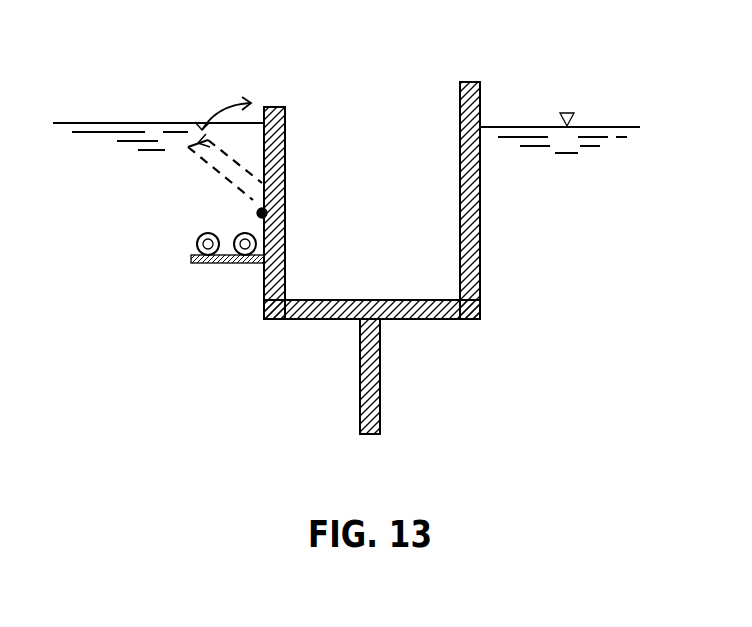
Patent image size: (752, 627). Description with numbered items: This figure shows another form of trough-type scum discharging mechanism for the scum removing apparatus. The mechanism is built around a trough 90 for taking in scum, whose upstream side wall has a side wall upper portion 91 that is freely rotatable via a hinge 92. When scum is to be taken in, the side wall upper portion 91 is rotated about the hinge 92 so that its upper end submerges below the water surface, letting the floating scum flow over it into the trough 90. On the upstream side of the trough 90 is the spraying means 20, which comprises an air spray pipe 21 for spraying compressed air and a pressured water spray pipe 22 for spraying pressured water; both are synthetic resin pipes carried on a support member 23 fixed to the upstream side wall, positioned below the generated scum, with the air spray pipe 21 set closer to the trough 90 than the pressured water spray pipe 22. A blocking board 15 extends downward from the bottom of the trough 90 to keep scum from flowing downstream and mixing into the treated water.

The blocking board 15 is at (381, 392).
The spraying means 20 is at (147, 257).
The air spray pipe 21 is at (219, 225).
The pressured water spray pipe 22 is at (200, 237).
The support member 23 is at (190, 263).
The trough 90 is at (420, 184).
The side wall upper portion 91 is at (285, 132).
The hinge 92 is at (260, 212).